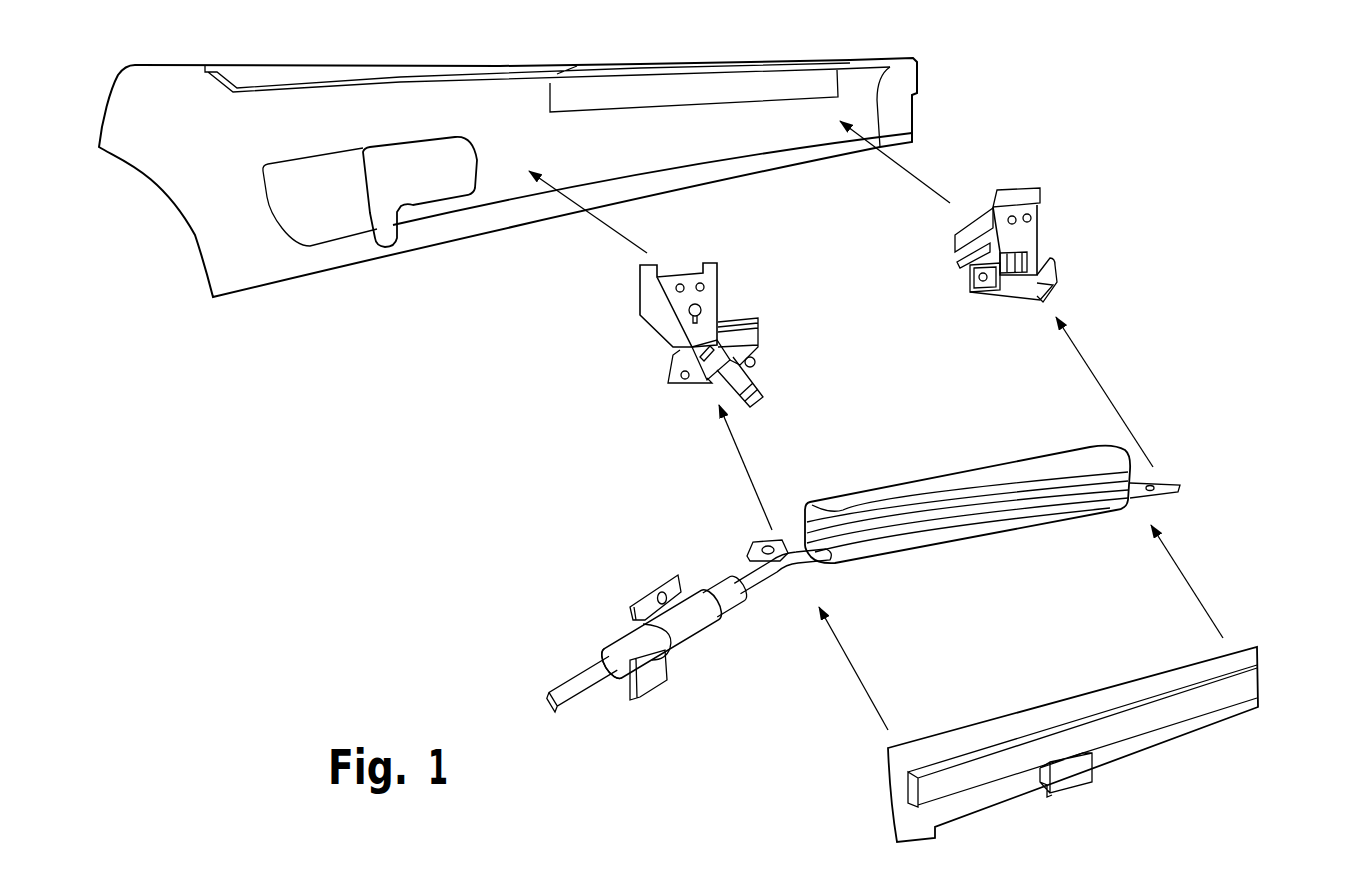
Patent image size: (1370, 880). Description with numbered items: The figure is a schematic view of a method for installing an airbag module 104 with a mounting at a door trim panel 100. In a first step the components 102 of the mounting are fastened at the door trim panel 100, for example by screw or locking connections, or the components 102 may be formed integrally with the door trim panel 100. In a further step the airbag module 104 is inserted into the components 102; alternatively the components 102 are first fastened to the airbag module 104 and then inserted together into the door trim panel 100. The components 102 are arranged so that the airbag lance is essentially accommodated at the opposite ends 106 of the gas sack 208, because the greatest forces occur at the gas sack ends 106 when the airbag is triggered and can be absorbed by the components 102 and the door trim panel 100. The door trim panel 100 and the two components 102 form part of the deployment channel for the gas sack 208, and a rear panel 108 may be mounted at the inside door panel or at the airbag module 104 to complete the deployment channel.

The door trim panel 100 is at (917, 112).
The components of the mounting 102 is at (956, 293).
The airbag module 104 is at (967, 515).
The opposite ends of the gas sack 106 is at (752, 547).
The rear panel 108 is at (1197, 746).
The gas sack 208 is at (977, 475).